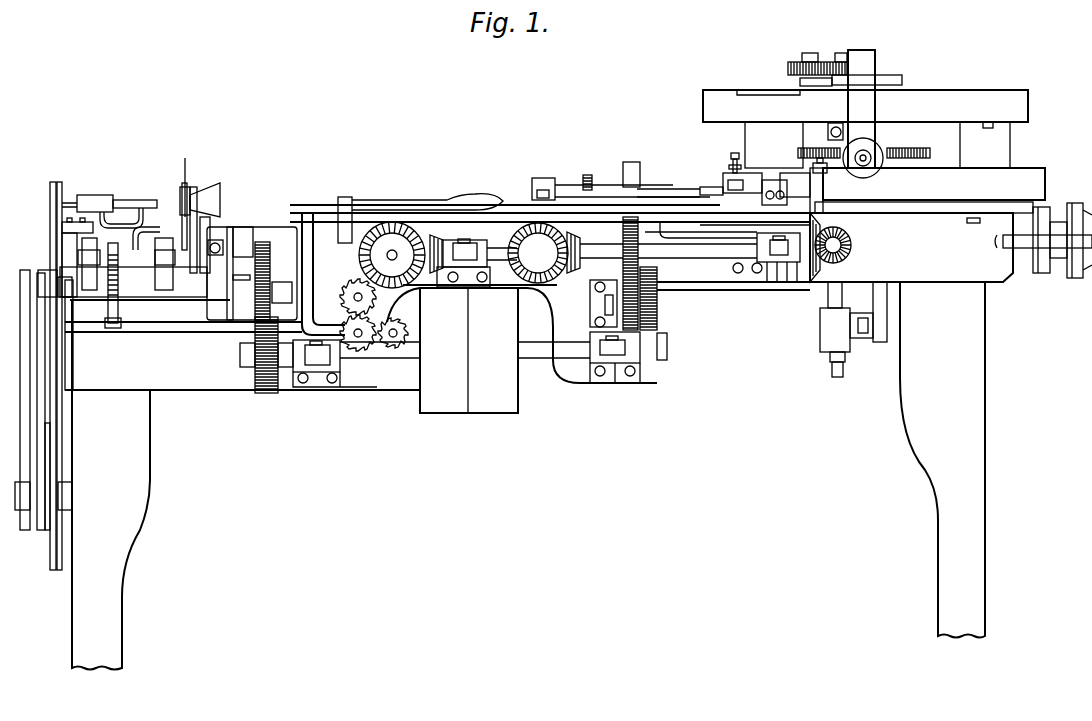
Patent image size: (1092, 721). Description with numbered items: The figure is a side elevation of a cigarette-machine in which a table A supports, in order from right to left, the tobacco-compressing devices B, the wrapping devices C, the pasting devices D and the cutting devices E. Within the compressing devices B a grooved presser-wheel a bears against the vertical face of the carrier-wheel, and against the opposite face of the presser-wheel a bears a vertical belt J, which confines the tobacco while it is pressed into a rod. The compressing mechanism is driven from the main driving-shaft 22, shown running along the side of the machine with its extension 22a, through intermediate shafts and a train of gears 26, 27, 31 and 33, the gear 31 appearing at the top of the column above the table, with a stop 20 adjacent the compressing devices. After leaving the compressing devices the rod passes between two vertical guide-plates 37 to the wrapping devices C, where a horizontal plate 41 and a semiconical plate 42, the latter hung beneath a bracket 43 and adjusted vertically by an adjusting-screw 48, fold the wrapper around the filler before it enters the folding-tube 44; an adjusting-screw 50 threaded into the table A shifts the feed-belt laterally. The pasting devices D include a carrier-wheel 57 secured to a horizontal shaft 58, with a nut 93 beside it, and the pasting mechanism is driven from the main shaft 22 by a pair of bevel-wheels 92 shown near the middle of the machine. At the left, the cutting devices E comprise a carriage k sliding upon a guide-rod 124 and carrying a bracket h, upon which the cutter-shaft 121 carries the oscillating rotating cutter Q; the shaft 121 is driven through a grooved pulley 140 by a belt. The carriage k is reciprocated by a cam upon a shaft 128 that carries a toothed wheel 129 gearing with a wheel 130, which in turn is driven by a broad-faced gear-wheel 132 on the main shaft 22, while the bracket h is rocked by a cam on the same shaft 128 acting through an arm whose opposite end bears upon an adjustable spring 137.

The table A is at (985, 345).
The tobacco-compressing devices B is at (927, 225).
The vertical belt J is at (934, 187).
The cutting devices E is at (118, 226).
The pasting devices D is at (632, 161).
The wrapping devices C is at (733, 174).
The oscillating rotating cutter Q is at (183, 168).
The bracket h is at (168, 240).
The carriage k is at (133, 282).
The grooved presser-wheel a is at (877, 140).
The stop 20 is at (832, 168).
The main driving-shaft 22 is at (398, 375).
The shaft 22a is at (717, 250).
The gear 26 is at (851, 254).
The gear 27 is at (823, 283).
The gear 31 is at (788, 68).
The gear 33 is at (927, 147).
The vertical guide-plates 37 is at (790, 175).
The horizontal plate 41 is at (686, 188).
The semiconical plate 42 is at (747, 190).
The bracket 43 is at (762, 183).
The folding-tube 44 is at (665, 180).
The adjusting-screw 48 is at (730, 154).
The adjusting-screw 50 is at (767, 205).
The carrier-wheel 57 is at (640, 173).
The horizontal shaft 58 is at (560, 166).
The bevel-wheels 92 is at (544, 261).
The nut 93 is at (588, 175).
The cutter-shaft 121 is at (117, 199).
The guide-rod 124 is at (67, 282).
The shaft 128 is at (275, 287).
The toothed wheel 129 is at (205, 188).
The wheel 130 is at (263, 243).
The broad-faced gear-wheel 132 is at (268, 394).
The spring 137 is at (103, 277).
The grooved pulley 140 is at (50, 205).